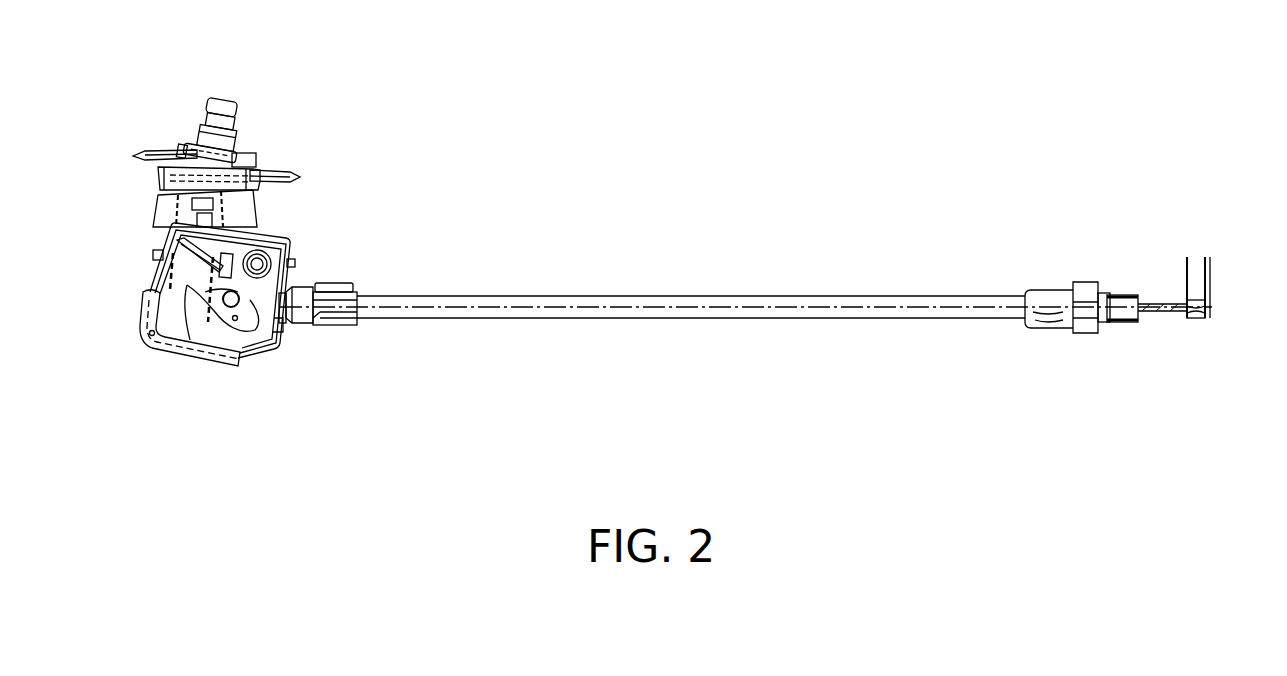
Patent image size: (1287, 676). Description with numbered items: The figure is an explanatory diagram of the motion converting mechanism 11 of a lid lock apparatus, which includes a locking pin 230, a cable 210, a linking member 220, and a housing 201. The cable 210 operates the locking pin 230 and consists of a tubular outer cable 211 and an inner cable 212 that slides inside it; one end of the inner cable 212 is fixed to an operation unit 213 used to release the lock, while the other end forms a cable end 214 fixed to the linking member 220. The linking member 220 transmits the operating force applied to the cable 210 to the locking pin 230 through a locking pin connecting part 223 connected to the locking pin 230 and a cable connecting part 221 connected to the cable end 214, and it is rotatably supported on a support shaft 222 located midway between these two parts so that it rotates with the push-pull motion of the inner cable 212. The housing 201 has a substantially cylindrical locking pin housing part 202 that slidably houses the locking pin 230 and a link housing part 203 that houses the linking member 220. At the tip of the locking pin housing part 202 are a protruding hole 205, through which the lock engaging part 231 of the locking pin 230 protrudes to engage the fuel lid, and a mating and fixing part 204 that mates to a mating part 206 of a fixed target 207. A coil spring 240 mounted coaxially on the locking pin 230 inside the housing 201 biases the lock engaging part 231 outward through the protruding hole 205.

The motion converting mechanism 11 is at (378, 107).
The housing 201 is at (157, 268).
The locking pin housing part 202 is at (149, 157).
The link housing part 203 is at (136, 340).
The mating and fixing part 204 is at (250, 163).
The protruding hole 205 is at (200, 143).
The mating part 206 is at (182, 146).
The fixed target 207 is at (302, 176).
The cable 210 is at (712, 295).
The outer cable 211 is at (613, 320).
The inner cable 212 is at (290, 284).
The operation unit 213 is at (1195, 285).
The cable end 214 is at (281, 308).
The linking member 220 is at (243, 248).
The cable connecting part 221 is at (245, 320).
The support shaft 222 is at (272, 264).
The locking pin connecting part 223 is at (153, 218).
The locking pin 230 is at (238, 118).
The lock engaging part 231 is at (231, 106).
The coil spring 240 is at (188, 330).